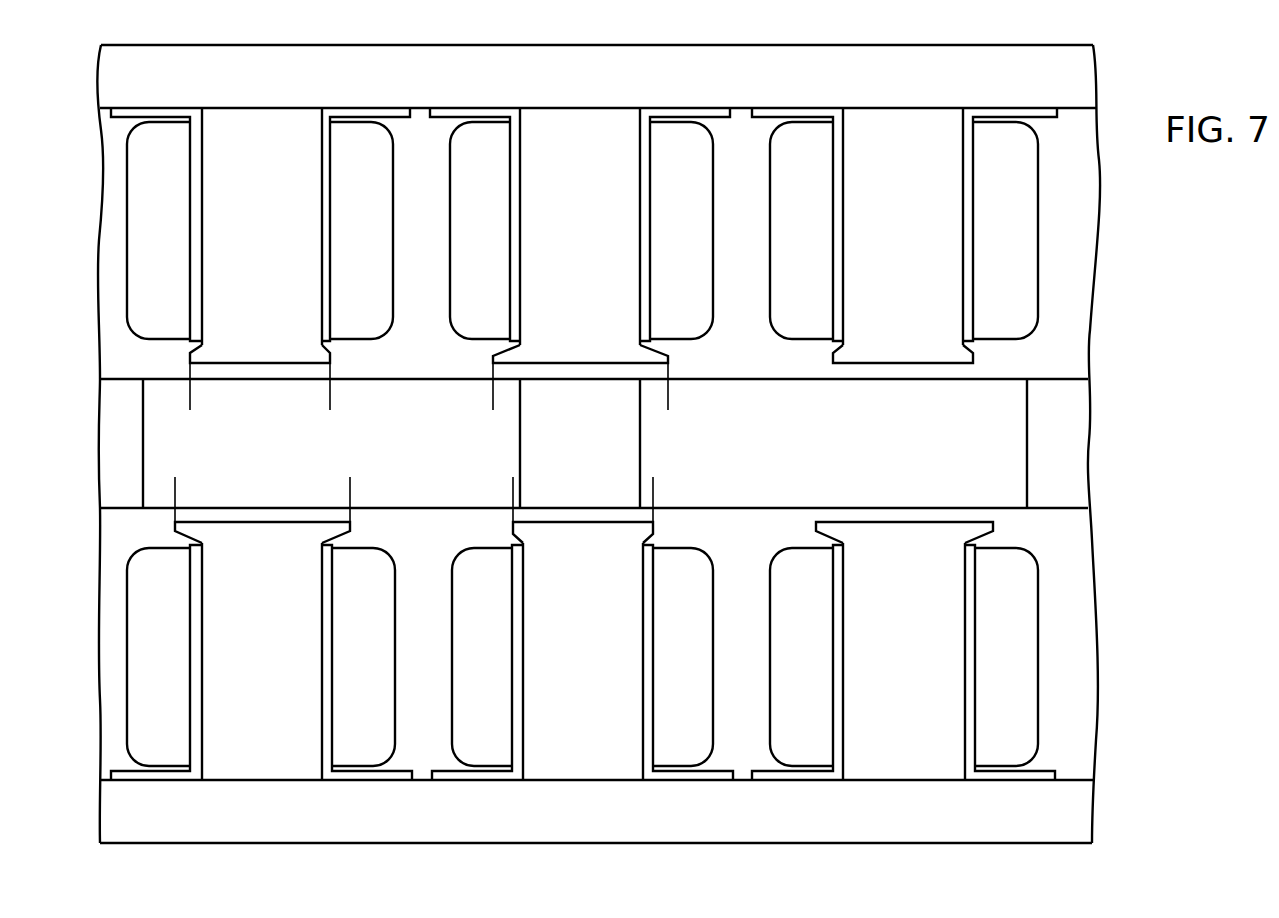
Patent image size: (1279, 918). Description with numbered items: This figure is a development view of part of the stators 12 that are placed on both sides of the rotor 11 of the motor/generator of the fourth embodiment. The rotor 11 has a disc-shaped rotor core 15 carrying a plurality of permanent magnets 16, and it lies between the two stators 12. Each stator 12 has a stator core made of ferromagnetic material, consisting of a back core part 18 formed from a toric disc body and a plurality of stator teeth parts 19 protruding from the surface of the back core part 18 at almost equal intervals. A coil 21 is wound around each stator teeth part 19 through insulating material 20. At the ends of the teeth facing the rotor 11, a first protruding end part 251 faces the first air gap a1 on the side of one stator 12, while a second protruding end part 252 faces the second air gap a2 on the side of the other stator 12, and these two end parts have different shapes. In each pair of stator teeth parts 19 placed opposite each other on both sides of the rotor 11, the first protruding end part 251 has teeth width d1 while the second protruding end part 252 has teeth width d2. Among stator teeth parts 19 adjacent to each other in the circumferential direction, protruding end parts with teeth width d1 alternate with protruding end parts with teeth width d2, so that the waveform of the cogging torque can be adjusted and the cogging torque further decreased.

The rotor 11 is at (1138, 411).
The stator 12 is at (1122, 232).
The rotor core 15 is at (1085, 488).
The permanent magnet 16 is at (162, 422).
The back core part 18 is at (797, 58).
The stator teeth part 19 is at (908, 146).
The insulating material 20 is at (1057, 110).
The coil 21 is at (1022, 235).
The first protruding end part 251 is at (902, 345).
The second protruding end part 252 is at (265, 535).
The first air gap a1 is at (829, 372).
The second air gap a2 is at (809, 513).
The teeth width d1 is at (330, 397).
The teeth width d2 is at (668, 397).